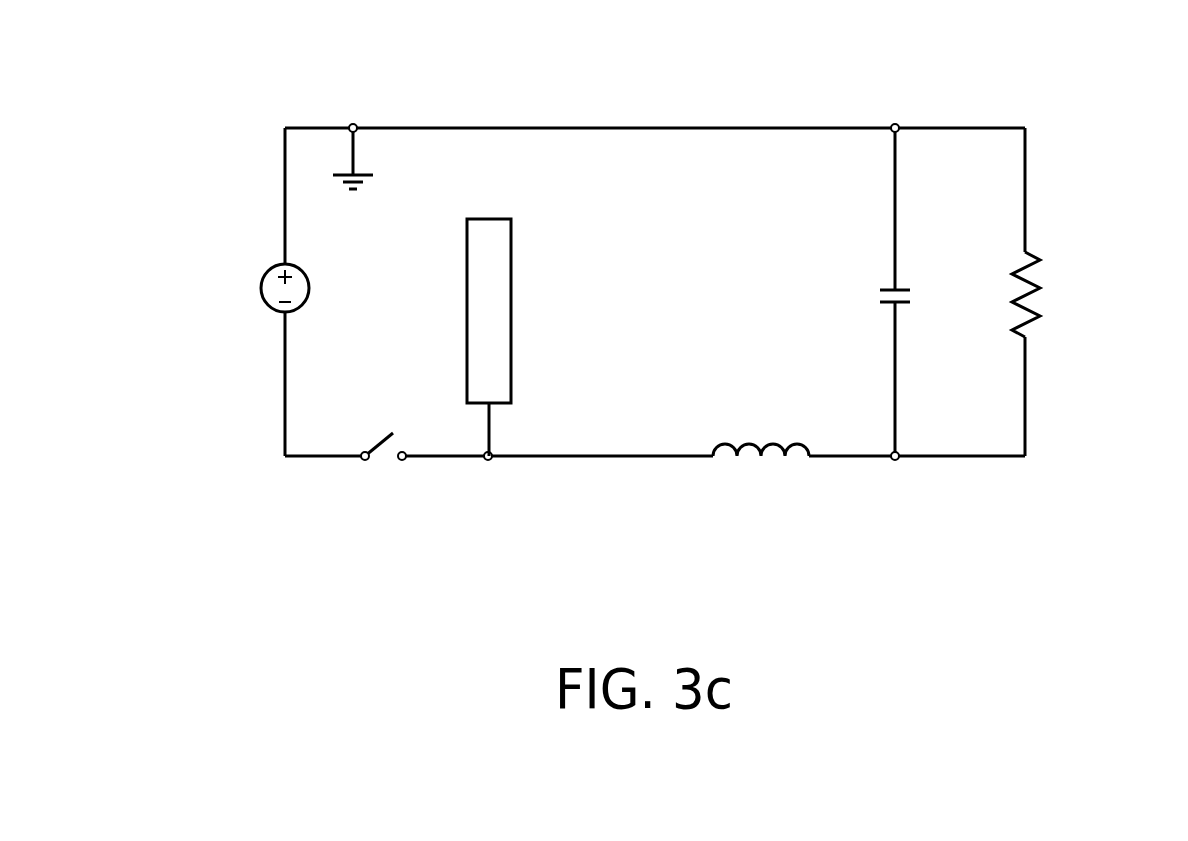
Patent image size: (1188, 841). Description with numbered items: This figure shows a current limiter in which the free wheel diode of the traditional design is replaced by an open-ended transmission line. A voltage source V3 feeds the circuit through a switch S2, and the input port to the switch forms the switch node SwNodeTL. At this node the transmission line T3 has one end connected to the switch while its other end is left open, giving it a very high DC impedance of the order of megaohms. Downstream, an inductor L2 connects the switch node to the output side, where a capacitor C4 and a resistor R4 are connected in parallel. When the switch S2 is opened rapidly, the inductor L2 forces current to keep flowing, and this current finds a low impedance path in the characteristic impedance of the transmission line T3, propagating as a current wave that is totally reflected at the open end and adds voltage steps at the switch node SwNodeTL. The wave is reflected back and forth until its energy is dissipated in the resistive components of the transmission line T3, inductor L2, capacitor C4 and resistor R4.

The voltage source V3 is at (265, 265).
The switch S2 is at (367, 442).
The switch node SwNodeTL is at (482, 470).
The transmission line T3 is at (525, 338).
The inductor L2 is at (775, 470).
The capacitor C4 is at (915, 265).
The resistor R4 is at (1047, 283).